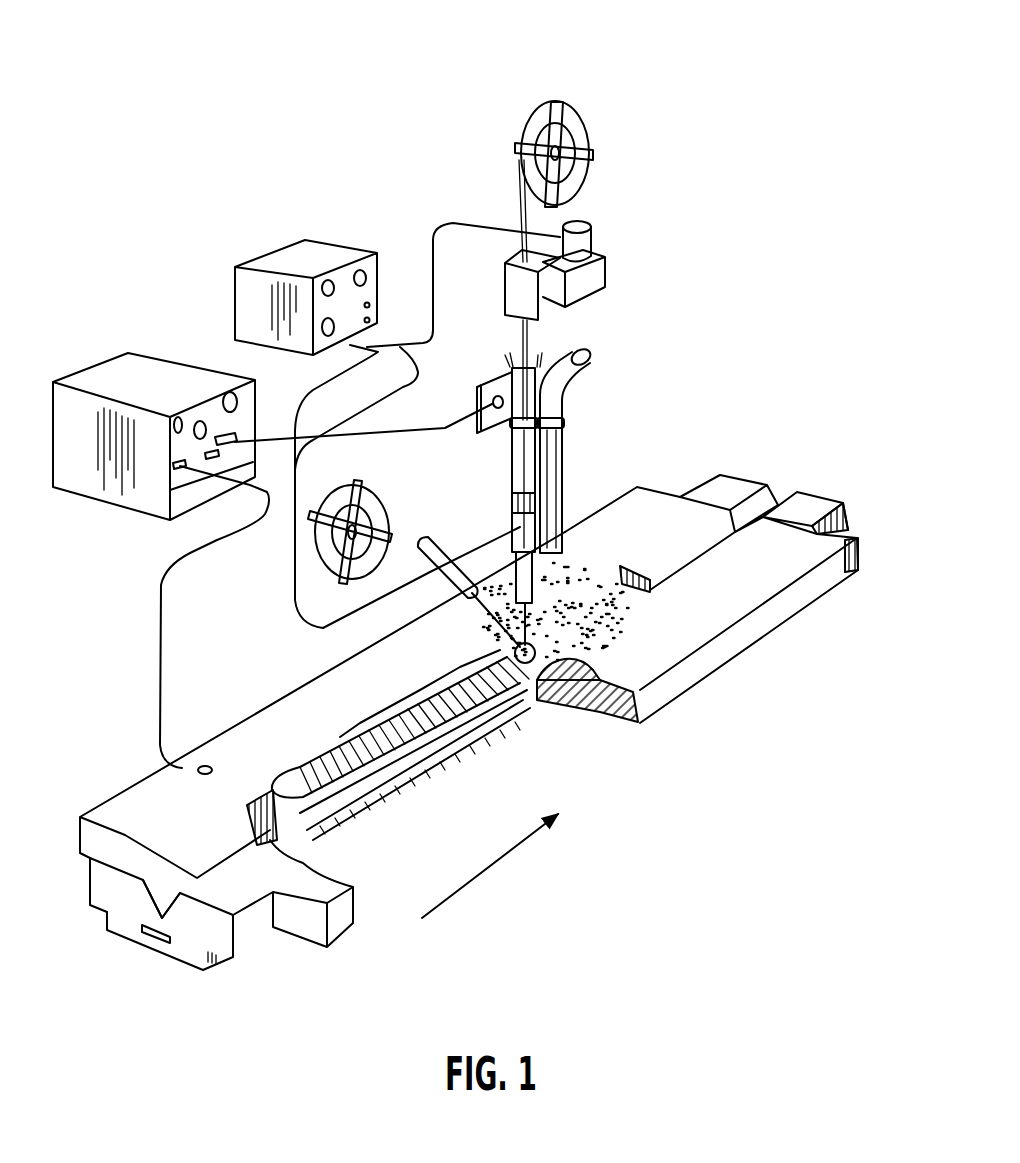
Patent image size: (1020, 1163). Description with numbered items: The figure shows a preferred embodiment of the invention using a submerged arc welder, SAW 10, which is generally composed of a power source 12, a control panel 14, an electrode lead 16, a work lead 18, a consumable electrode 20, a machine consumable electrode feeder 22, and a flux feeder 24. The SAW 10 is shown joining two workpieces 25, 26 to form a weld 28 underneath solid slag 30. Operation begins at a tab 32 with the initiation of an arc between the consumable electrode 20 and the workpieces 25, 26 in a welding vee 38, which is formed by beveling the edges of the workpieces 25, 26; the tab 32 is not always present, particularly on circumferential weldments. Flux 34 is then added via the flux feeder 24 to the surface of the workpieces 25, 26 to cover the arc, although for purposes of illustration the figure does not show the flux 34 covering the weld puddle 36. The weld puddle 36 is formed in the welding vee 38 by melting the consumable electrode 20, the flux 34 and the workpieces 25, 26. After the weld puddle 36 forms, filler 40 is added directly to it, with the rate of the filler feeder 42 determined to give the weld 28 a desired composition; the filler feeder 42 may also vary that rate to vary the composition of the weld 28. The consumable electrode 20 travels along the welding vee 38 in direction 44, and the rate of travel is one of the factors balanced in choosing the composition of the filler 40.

The submerged arc welder 10 is at (660, 88).
The power source 12 is at (178, 363).
The control panel 14 is at (253, 262).
The electrode lead 16 is at (425, 428).
The work lead 18 is at (163, 660).
The consumable electrode 20 is at (503, 578).
The machine consumable electrode feeder 22 is at (503, 287).
The flux feeder 24 is at (623, 316).
The workpiece 25 is at (616, 508).
The workpiece 26 is at (663, 703).
The weld 28 is at (297, 767).
The solid slag 30 is at (357, 723).
The tab 32 is at (252, 925).
The flux 34 is at (603, 616).
The weld puddle 36 is at (525, 663).
The welding vee 38 is at (177, 877).
The filler 40 is at (475, 608).
The filler feeder 42 is at (443, 540).
The direction 44 is at (503, 853).